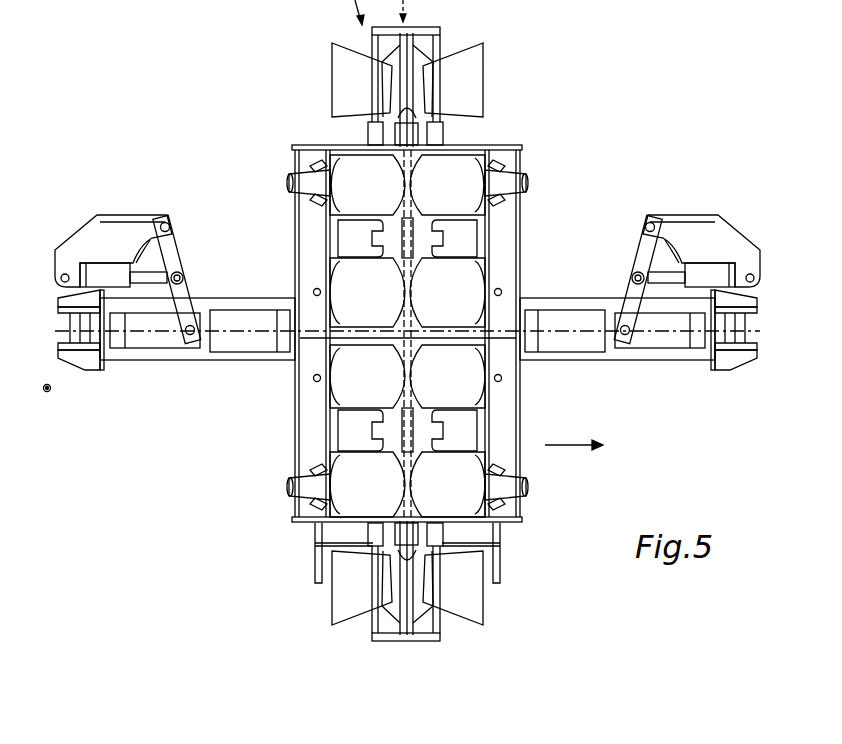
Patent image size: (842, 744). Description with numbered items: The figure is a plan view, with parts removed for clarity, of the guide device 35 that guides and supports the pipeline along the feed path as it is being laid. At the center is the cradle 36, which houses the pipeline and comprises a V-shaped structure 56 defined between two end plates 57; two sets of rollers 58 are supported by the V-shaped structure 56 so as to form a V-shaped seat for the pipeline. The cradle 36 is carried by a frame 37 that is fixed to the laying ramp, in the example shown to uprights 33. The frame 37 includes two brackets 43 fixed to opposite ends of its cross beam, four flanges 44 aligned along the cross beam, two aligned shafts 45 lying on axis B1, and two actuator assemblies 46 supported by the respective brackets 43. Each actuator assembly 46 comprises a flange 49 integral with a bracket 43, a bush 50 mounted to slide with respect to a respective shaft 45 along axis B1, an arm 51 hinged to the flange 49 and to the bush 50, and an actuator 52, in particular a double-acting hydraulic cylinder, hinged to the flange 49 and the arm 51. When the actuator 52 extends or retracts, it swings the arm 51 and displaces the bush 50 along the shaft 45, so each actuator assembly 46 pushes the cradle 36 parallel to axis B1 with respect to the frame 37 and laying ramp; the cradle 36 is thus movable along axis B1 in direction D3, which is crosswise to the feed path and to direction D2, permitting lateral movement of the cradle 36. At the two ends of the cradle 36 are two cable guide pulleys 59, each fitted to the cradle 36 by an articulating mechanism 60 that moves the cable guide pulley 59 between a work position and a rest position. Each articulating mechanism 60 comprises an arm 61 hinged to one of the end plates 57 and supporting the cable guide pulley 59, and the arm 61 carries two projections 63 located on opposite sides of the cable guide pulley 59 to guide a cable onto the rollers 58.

The uprights 33 is at (60, 352).
The guide device 35 is at (580, 148).
The cradle 36 is at (522, 235).
The frame 37 is at (282, 366).
The brackets 43 is at (80, 360).
The flanges 44 is at (120, 355).
The shafts 45 is at (148, 338).
The actuator assemblies 46 is at (148, 208).
The flange 49 is at (110, 240).
The bush 50 is at (192, 342).
The arm 51 is at (180, 253).
The actuator 52 is at (95, 265).
The V-shaped structure 56 is at (505, 401).
The end plates 57 is at (520, 147).
The rollers 58 is at (360, 197).
The cable guide pulleys 59 is at (485, 60).
The articulating mechanism 60 is at (358, 40).
The arm 61 is at (430, 50).
The projections 63 is at (342, 87).
The axis B1 is at (55, 325).
The direction D2 is at (46, 394).
The direction D3 is at (576, 424).